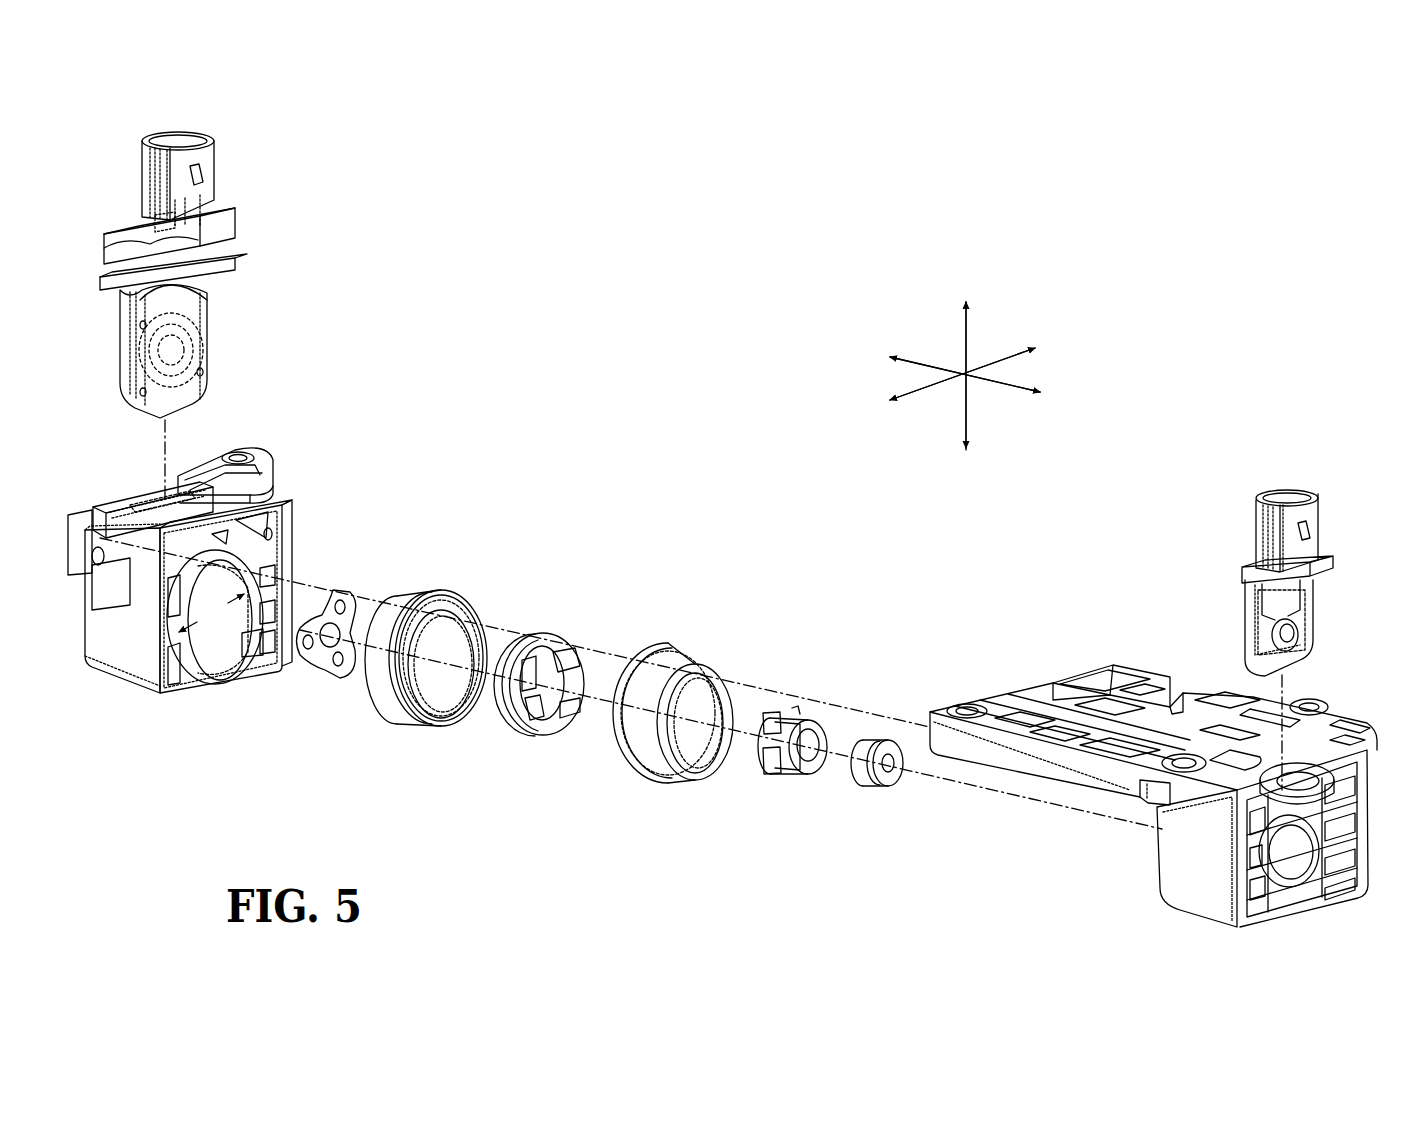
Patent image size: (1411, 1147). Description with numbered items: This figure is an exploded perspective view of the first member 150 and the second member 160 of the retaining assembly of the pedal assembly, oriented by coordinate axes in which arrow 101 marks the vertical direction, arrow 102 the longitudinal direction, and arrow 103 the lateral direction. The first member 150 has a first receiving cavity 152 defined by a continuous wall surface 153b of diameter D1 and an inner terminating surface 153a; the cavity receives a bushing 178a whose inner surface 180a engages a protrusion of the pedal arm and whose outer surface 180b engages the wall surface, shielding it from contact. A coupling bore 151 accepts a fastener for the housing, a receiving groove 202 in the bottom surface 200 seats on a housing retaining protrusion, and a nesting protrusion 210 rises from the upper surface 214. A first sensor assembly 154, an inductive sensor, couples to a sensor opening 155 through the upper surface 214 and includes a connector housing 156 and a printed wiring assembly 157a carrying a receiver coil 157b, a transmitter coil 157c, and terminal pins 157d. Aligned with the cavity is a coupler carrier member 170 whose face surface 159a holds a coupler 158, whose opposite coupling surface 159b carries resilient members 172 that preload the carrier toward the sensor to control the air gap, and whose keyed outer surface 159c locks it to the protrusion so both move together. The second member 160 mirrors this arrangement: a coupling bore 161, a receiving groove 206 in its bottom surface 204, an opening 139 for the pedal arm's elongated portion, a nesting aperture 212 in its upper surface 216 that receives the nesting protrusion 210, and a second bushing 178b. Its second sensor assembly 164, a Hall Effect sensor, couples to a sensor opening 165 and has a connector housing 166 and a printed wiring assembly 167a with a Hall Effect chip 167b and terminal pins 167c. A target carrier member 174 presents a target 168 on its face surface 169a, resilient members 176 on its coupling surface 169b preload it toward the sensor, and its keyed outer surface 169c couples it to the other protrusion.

The arrow 101 is at (960, 340).
The arrow 102 is at (986, 392).
The arrow 103 is at (992, 358).
The opening 139 is at (1184, 692).
The first member 150 is at (216, 584).
The coupling bore 151 is at (240, 449).
The first receiving cavity 152 is at (218, 652).
The inner terminating surface 153a is at (192, 587).
The continuous wall surface 153b is at (207, 660).
The first sensor assembly 154 is at (229, 242).
The sensor opening 155 is at (143, 510).
The connector housing 156 is at (168, 138).
The printed wiring assembly 157a is at (238, 262).
The receiver coil 157b is at (201, 364).
The transmitter coil 157c is at (208, 348).
The terminal pins 157d is at (206, 230).
The coupler 158 is at (312, 664).
The face surface 159a is at (514, 656).
The coupling surface 159b is at (553, 656).
The outer surface 159c is at (536, 736).
The second member 160 is at (1161, 796).
The coupling bore 161 is at (1192, 758).
The second sensor assembly 164 is at (1268, 548).
The sensor opening 165 is at (1320, 745).
The connector housing 166 is at (1302, 494).
The printed wiring assembly 167a is at (1318, 615).
The Hall Effect chip 167b is at (1246, 596).
The terminal pins 167c is at (1247, 553).
The target 168 is at (880, 796).
The face surface 169a is at (824, 722).
The coupling surface 169b is at (746, 735).
The outer surface 169c is at (788, 771).
The coupler carrier member 170 is at (547, 706).
The resilient members 172 is at (572, 678).
The target carrier member 174 is at (807, 755).
The resilient members 176 is at (783, 712).
The bushing 178a is at (392, 716).
The bushing 178b is at (655, 792).
The inner surface 180a is at (456, 680).
The outer surface 180b is at (411, 600).
The bottom surface 200 is at (115, 690).
The receiving groove 202 is at (140, 690).
The bottom surface 204 is at (1225, 930).
The receiving groove 206 is at (1192, 920).
The nesting protrusion 210 is at (270, 505).
The nesting aperture 212 is at (1092, 674).
The upper surface 214 is at (286, 530).
The upper surface 216 is at (958, 706).
The diameter D1 is at (211, 613).